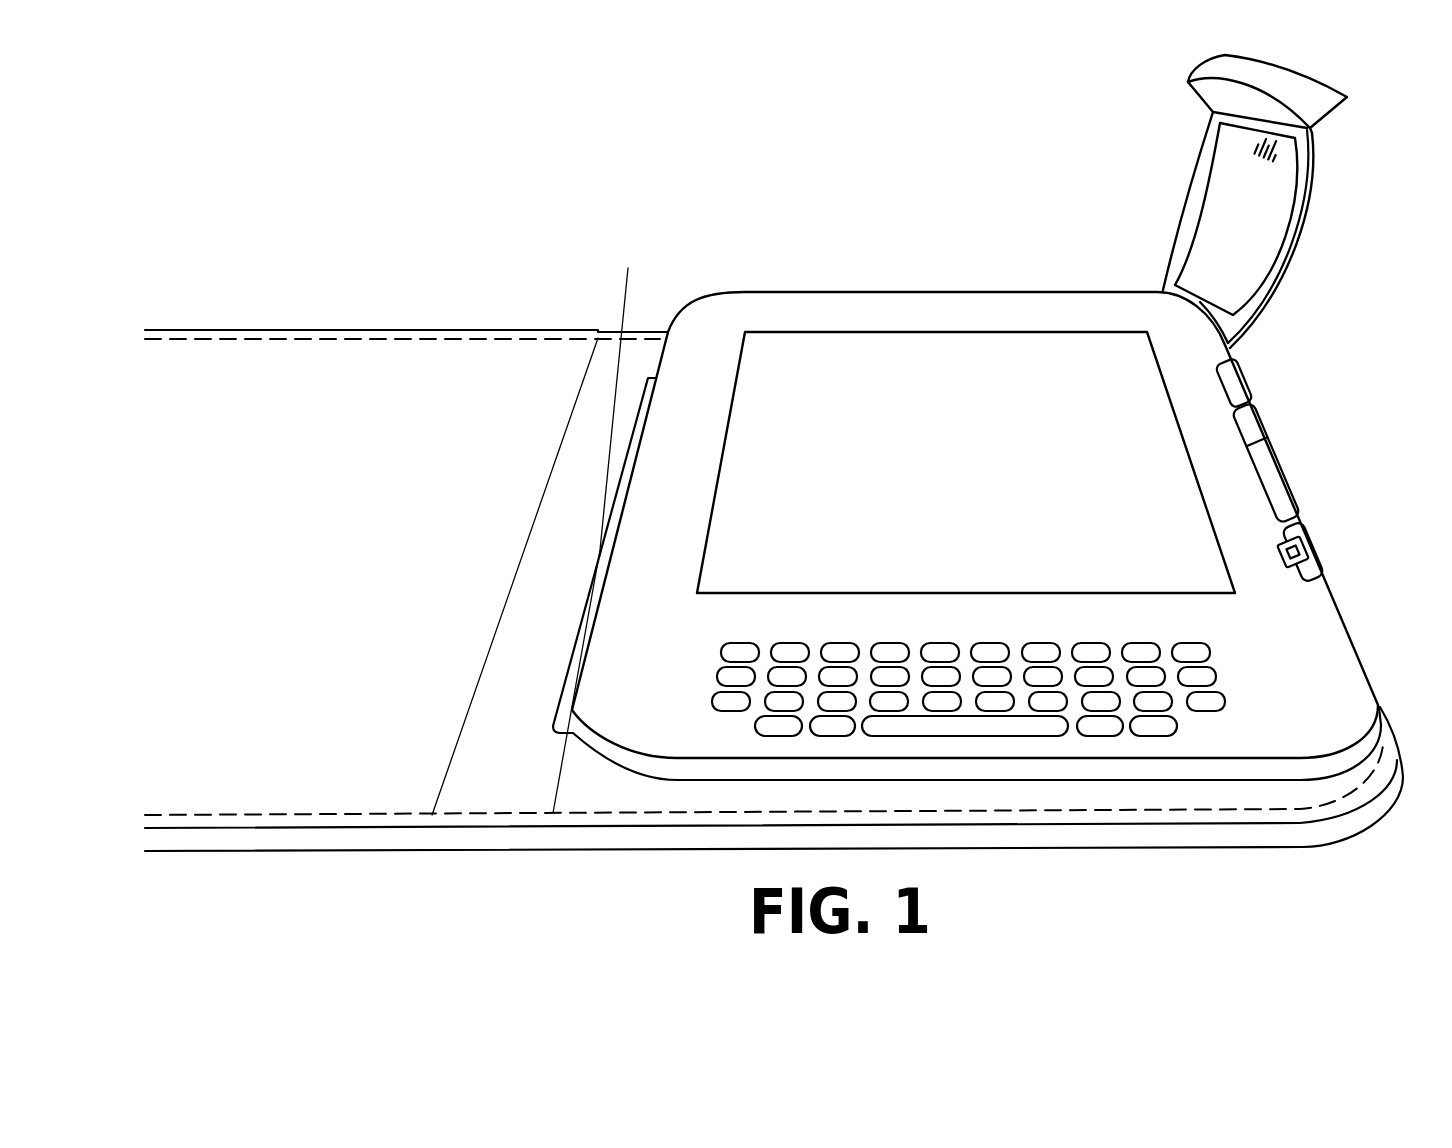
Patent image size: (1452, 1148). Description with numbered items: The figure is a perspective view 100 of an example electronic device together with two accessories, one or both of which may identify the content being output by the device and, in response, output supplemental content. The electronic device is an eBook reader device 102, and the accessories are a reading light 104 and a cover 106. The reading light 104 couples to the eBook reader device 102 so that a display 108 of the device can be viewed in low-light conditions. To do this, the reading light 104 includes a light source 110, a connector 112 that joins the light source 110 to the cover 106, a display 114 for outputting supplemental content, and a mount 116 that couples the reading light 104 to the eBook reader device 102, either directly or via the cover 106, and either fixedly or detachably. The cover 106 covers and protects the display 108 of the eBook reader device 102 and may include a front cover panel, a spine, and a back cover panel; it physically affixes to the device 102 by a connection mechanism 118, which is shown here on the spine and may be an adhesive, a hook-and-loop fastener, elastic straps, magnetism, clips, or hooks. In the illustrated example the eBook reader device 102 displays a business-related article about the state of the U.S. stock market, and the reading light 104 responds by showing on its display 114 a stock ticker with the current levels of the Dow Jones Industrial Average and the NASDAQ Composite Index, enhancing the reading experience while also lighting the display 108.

The perspective view 100 is at (678, 145).
The eBook reader device 102 is at (928, 264).
The reading light 104 is at (1135, 147).
The cover 106 is at (400, 298).
The display 108 is at (848, 335).
The light source 110 is at (1322, 125).
The connector 112 is at (1276, 288).
The display 114 is at (1290, 227).
The mount 116 is at (1231, 348).
The connection mechanism 118 is at (628, 268).